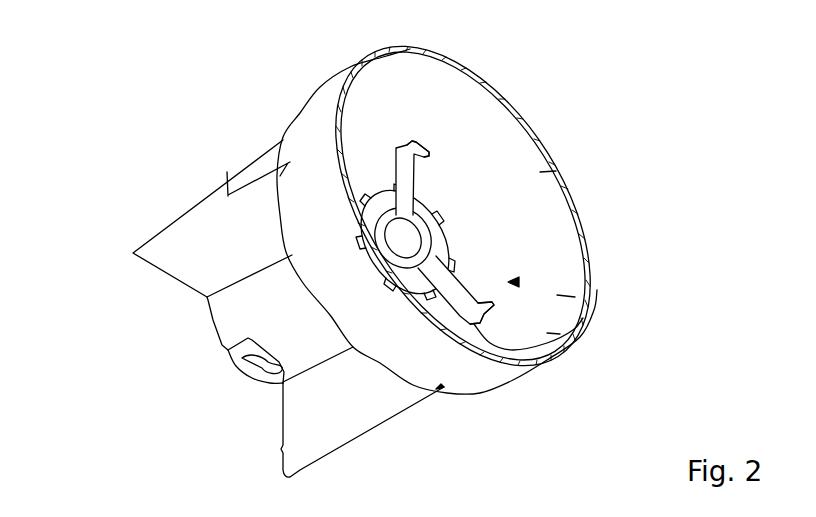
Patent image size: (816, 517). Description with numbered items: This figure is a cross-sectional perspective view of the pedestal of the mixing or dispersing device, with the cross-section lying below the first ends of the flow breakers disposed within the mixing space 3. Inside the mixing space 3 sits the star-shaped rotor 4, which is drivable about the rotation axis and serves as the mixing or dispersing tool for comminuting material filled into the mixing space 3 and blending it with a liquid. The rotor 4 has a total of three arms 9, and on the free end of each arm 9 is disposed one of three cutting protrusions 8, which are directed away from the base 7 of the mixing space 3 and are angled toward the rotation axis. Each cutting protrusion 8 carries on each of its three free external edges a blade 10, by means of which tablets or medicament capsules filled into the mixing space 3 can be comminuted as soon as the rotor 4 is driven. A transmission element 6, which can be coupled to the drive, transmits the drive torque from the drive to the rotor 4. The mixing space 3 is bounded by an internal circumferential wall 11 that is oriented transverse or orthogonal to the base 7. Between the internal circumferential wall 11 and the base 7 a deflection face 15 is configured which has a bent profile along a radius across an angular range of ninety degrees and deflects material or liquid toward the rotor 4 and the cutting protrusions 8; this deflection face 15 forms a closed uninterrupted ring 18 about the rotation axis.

The mixing space 3 is at (548, 230).
The rotor 4 is at (478, 195).
The transmission element 6 is at (283, 308).
The base 7 is at (514, 282).
The cutting protrusion 8 is at (350, 103).
The arm 9 is at (397, 192).
The blade 10 is at (397, 148).
The internal circumferential wall 11 is at (540, 172).
The deflection face 15 is at (557, 295).
The closed uninterrupted ring 18 is at (547, 333).